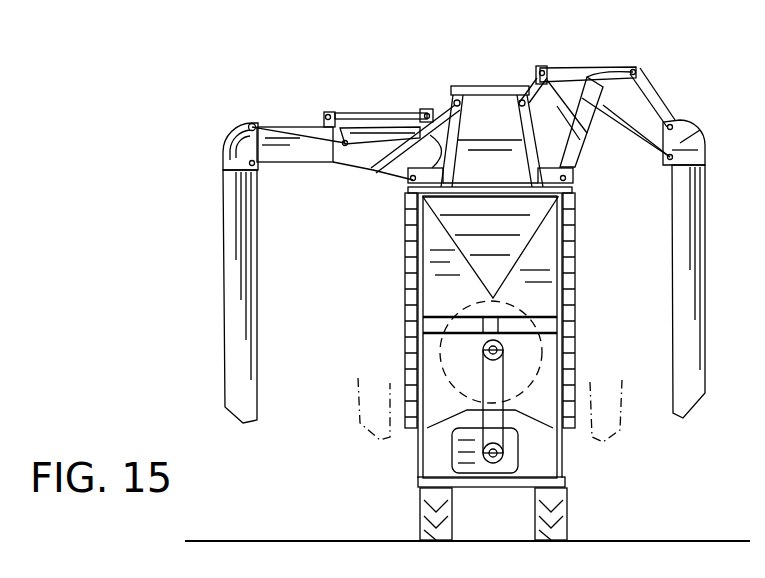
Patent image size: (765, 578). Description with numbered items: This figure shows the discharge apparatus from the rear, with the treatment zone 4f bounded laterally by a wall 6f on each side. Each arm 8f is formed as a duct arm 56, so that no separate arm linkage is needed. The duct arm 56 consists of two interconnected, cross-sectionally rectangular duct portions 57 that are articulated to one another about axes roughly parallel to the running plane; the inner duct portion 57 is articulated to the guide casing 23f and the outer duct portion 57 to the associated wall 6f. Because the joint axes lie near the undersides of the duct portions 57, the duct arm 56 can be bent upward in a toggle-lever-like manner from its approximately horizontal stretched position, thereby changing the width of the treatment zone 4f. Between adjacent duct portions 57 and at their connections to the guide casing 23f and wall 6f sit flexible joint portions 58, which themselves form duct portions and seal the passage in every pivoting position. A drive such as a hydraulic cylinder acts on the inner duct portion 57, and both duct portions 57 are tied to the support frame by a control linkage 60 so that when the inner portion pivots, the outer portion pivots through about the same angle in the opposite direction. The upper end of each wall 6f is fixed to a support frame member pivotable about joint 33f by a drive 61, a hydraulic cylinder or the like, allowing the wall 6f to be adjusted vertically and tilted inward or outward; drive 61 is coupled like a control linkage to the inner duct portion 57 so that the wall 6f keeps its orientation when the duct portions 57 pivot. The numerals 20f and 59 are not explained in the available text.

The treatment zone 4f is at (643, 402).
The wall 6f is at (237, 335).
The arm 8f is at (624, 40).
The ladder rail / mast 20f is at (575, 369).
The guide casing 23f is at (433, 282).
The joint 33f is at (223, 159).
The duct arm 56 is at (331, 167).
The duct portion 57 is at (302, 156).
The flexible joint portion 58 is at (248, 128).
The A-frame support 59 is at (454, 135).
The control linkage 60 is at (396, 113).
The drive 61 is at (306, 126).